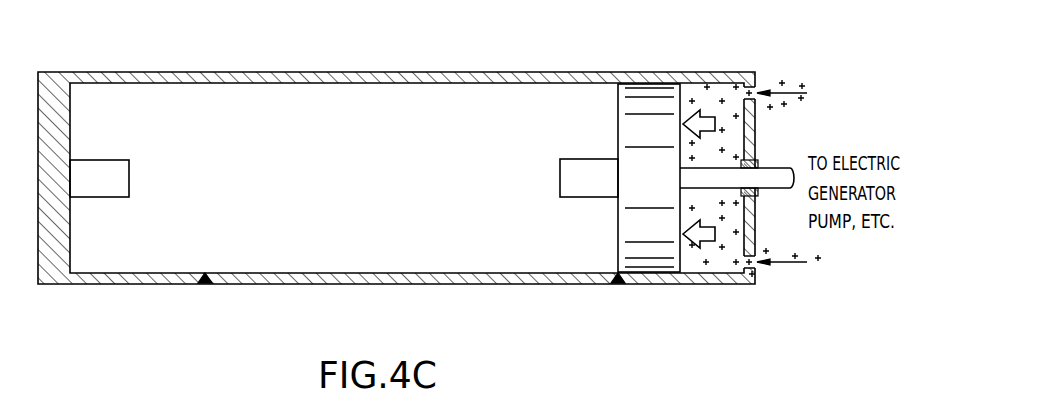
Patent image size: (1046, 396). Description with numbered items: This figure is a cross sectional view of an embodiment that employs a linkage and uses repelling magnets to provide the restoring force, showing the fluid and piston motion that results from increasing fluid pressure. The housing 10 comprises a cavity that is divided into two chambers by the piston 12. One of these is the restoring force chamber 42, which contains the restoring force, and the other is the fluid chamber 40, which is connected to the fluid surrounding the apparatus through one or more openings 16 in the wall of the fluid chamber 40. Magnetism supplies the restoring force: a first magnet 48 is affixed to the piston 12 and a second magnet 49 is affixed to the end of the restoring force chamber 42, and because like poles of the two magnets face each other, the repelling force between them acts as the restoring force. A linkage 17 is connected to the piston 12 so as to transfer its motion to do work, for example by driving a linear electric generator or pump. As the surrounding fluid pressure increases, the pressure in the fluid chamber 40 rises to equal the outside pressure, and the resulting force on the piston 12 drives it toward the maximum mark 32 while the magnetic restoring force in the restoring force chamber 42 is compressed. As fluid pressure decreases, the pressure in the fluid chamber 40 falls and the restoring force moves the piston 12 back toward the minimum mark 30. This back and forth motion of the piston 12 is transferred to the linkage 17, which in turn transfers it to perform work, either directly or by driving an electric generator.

The housing 10 is at (455, 72).
The restoring force chamber 42 is at (102, 92).
The second magnet 49 is at (98, 160).
The first magnet 48 is at (590, 197).
The piston 12 is at (665, 84).
The linkage 17 is at (780, 168).
The openings 16 is at (755, 92).
The fluid chamber 40 is at (713, 284).
The maximum mark 32 is at (205, 285).
The minimum mark 30 is at (620, 285).